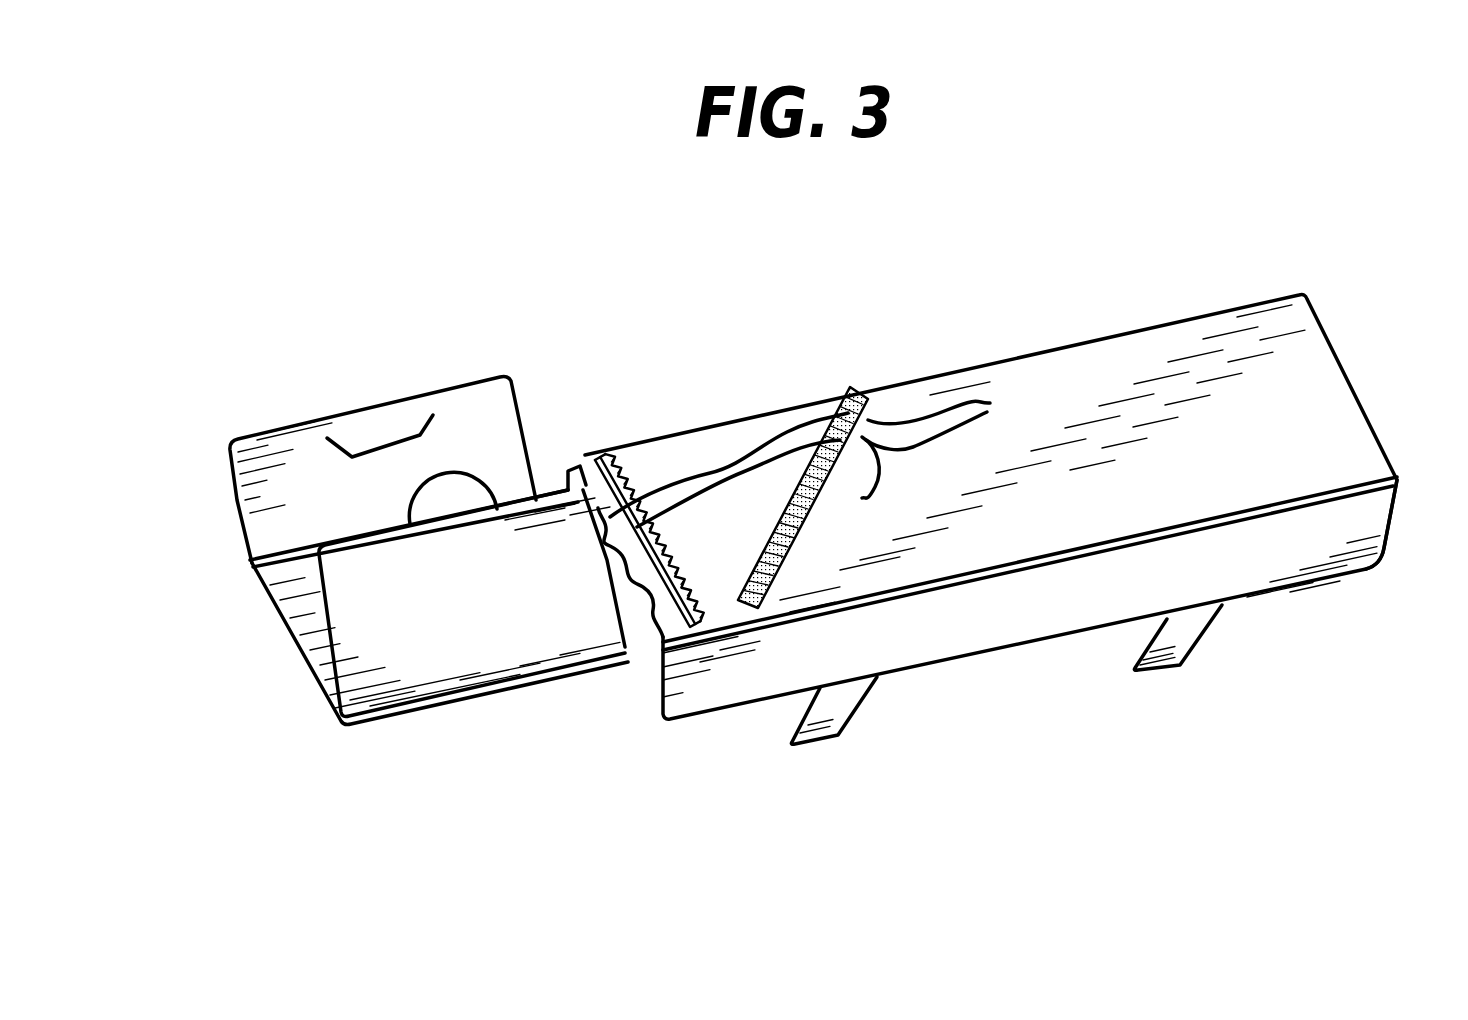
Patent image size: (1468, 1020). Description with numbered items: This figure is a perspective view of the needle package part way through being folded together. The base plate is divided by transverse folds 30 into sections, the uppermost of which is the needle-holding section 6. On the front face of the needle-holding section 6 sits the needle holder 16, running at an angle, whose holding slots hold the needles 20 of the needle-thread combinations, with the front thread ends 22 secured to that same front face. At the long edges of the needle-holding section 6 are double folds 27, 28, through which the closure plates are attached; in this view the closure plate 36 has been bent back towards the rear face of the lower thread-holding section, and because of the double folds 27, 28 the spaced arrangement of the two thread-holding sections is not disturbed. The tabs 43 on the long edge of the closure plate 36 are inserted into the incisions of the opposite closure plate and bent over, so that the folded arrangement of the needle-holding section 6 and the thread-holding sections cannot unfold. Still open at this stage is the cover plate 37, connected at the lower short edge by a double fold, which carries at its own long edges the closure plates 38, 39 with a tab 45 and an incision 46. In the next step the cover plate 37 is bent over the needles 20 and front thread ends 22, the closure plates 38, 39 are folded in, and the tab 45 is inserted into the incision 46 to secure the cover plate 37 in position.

The needle-holding section 6 is at (1237, 427).
The needle holder 16 is at (850, 390).
The needles 20 is at (947, 419).
The front thread ends 22 is at (767, 450).
The double fold 27 is at (1170, 322).
The double fold 28 is at (1347, 500).
The fold 30 is at (637, 648).
The closure plate 36 is at (1097, 600).
The cover plate 37 is at (287, 597).
The closure plate 38 is at (268, 473).
The closure plate 39 is at (472, 610).
The tabs 43 is at (1173, 642).
The tab 45 is at (460, 490).
The incision 46 is at (363, 452).